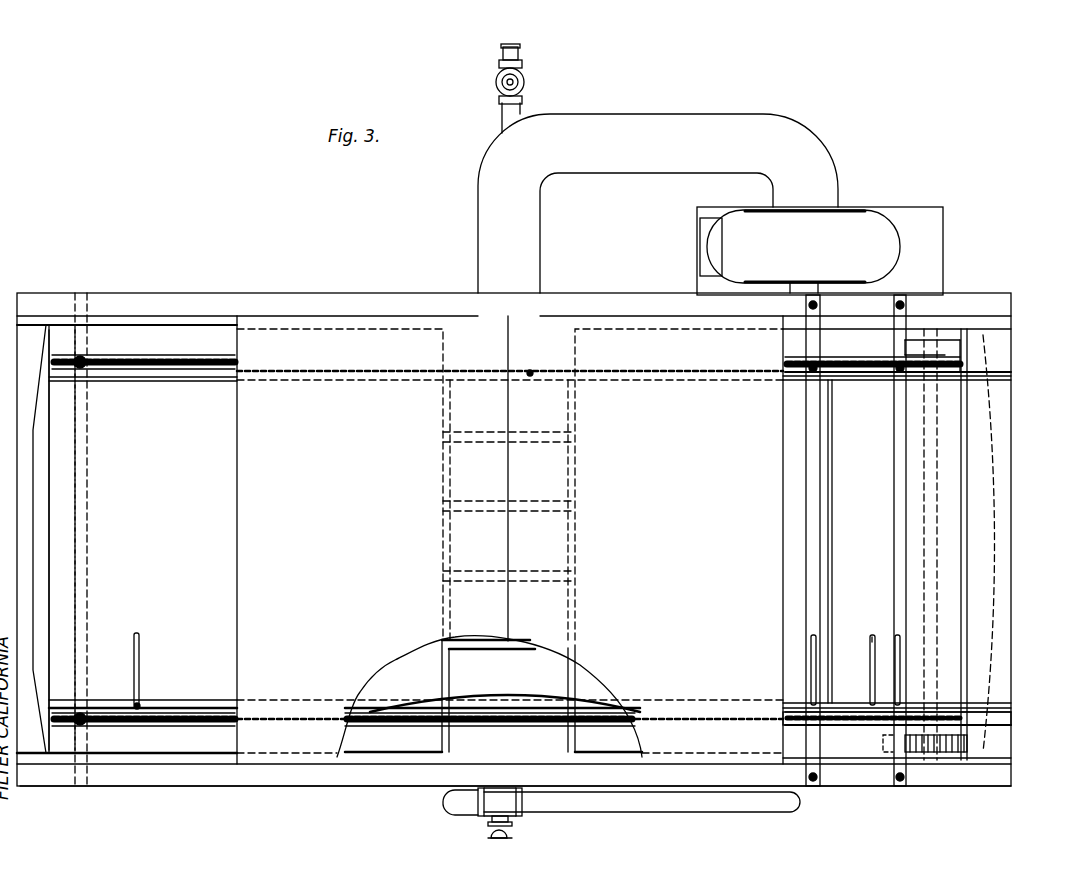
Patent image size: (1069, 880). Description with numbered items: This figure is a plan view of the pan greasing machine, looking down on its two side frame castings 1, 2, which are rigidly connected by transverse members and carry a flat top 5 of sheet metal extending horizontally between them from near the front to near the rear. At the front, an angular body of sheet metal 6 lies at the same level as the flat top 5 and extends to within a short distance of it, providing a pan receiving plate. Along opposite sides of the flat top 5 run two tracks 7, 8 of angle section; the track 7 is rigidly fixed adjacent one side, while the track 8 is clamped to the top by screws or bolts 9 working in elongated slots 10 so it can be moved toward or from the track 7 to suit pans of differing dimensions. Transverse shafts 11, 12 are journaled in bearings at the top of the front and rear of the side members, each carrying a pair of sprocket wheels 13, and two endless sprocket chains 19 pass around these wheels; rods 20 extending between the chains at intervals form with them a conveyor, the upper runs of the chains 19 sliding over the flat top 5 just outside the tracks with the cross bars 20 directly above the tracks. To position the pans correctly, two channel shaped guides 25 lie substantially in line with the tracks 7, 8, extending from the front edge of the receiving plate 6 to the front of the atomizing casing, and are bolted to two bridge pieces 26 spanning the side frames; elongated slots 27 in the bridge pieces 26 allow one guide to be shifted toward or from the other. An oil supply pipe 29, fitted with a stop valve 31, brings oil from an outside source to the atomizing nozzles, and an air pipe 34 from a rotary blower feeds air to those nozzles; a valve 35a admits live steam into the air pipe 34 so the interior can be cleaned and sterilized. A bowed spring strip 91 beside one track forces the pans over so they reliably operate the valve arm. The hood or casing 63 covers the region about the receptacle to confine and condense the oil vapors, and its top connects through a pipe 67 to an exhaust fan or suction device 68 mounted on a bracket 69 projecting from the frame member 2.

The side frame casting 1 is at (185, 786).
The side frame casting 2 is at (310, 300).
The flat top 5 is at (55, 505).
The angular body of sheet metal 6 is at (988, 601).
The track 7 is at (180, 378).
The track 8 is at (201, 704).
The screws or bolts 9 is at (139, 705).
The elongated slots 10 is at (140, 646).
The transverse shaft 11 is at (932, 461).
The transverse shaft 12 is at (88, 544).
The sprocket wheels 13 is at (85, 360).
The endless sprocket chains 19 is at (184, 358).
The rods 20 is at (832, 478).
The channel shaped members 25 is at (1000, 372).
The bridge pieces 26 is at (898, 506).
The elongated slots 27 is at (815, 650).
The oil supply pipe 29 is at (502, 118).
The stop valve 31 is at (525, 84).
The air pipe 34 is at (656, 803).
The valve 35a is at (510, 834).
The hood or casing 63 is at (242, 512).
The pipe 67 is at (654, 125).
The exhaust fan or suction device 68 is at (880, 233).
The bracket 69 is at (943, 220).
The bowed spring strip 91 is at (500, 704).